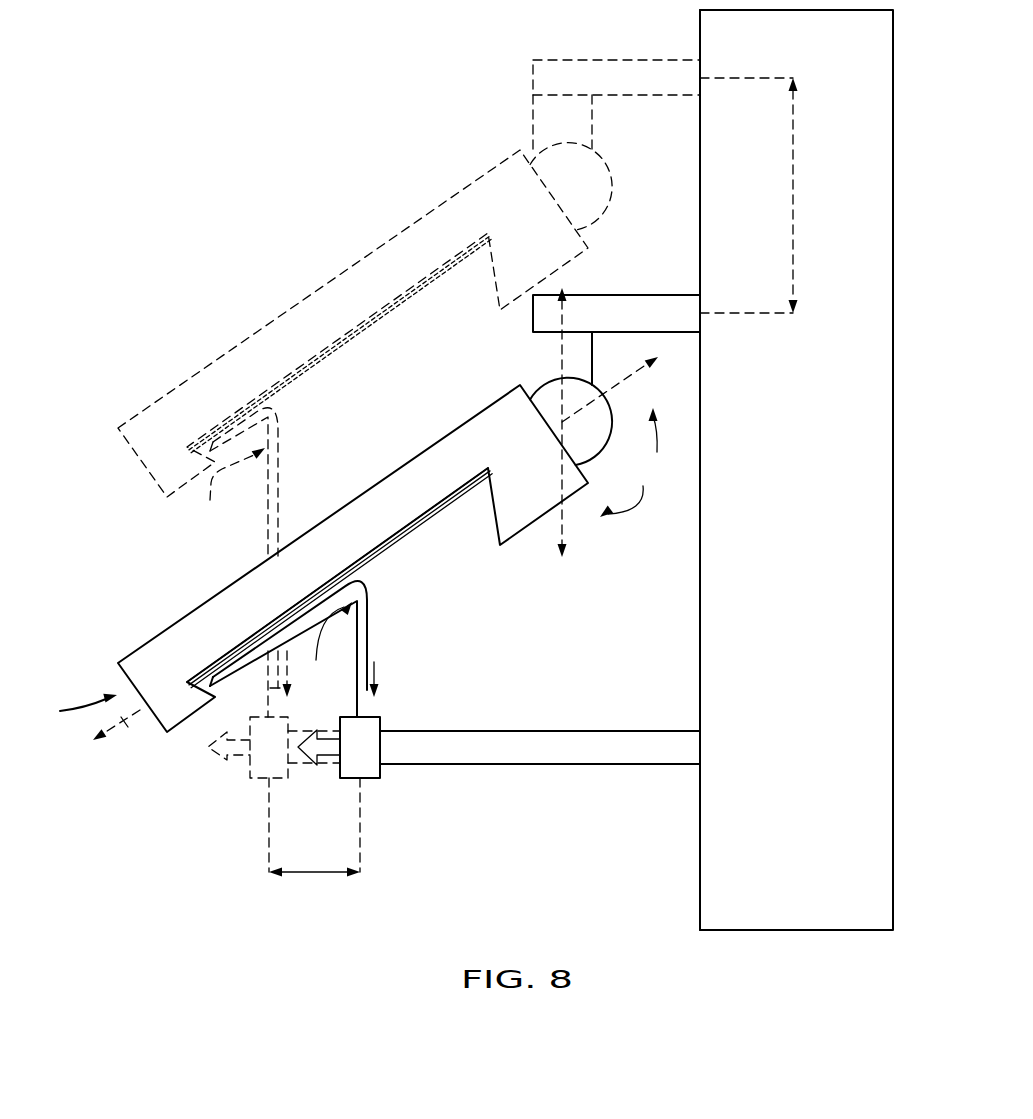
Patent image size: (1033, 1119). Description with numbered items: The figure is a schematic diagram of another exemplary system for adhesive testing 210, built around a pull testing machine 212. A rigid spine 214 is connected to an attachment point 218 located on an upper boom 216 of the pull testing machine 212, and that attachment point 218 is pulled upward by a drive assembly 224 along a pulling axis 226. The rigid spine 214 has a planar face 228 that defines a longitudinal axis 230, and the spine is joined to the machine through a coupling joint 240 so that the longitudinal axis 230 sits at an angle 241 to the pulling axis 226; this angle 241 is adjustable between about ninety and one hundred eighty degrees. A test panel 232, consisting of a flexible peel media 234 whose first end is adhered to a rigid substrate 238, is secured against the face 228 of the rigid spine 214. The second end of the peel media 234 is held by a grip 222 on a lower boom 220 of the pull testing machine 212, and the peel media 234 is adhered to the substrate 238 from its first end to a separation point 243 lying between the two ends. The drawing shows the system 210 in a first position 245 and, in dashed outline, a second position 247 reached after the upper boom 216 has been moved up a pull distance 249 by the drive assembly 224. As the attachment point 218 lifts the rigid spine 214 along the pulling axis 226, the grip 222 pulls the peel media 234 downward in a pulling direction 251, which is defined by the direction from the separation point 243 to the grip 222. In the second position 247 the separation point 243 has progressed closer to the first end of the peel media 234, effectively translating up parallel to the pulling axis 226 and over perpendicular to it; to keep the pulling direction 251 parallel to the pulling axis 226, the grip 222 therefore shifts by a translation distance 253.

The system for adhesive testing 210 is at (208, 90).
The pull testing machine 212 is at (862, 86).
The rigid spine 214 is at (136, 664).
The upper boom 216 is at (657, 307).
The attachment point 218 is at (548, 357).
The lower boom 220 is at (632, 755).
The grip 222 is at (365, 773).
The drive assembly 224 is at (718, 657).
The pulling axis 226 is at (568, 522).
The face 228 is at (418, 523).
The longitudinal axis 230 is at (136, 732).
The test panel 232 is at (455, 502).
The flexible peel media 234 is at (367, 637).
The rigid substrate 238 is at (380, 552).
The coupling joint 240 is at (548, 393).
The angle 241 is at (631, 462).
The separation point 243 is at (274, 572).
The first position 245 is at (72, 710).
The second position 247 is at (114, 388).
The pull distance 249 is at (793, 205).
The pulling direction 251 is at (380, 673).
The translation distance 253 is at (312, 873).